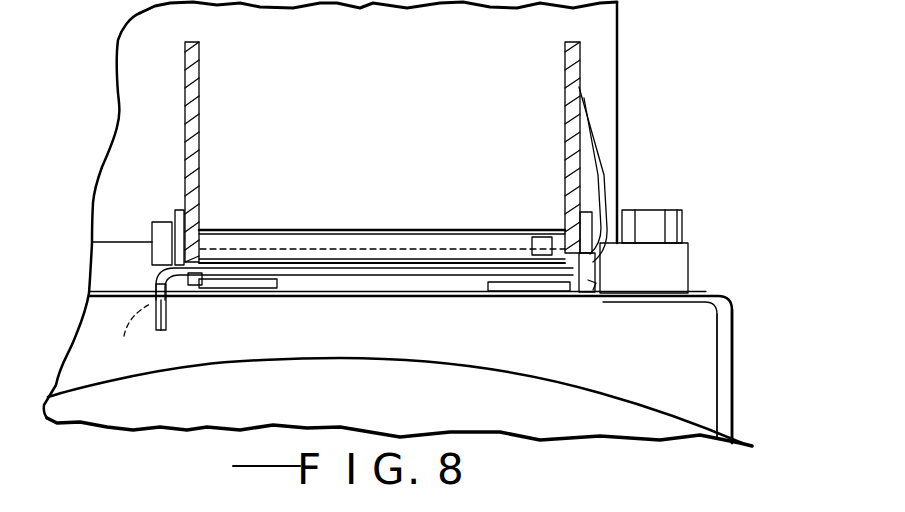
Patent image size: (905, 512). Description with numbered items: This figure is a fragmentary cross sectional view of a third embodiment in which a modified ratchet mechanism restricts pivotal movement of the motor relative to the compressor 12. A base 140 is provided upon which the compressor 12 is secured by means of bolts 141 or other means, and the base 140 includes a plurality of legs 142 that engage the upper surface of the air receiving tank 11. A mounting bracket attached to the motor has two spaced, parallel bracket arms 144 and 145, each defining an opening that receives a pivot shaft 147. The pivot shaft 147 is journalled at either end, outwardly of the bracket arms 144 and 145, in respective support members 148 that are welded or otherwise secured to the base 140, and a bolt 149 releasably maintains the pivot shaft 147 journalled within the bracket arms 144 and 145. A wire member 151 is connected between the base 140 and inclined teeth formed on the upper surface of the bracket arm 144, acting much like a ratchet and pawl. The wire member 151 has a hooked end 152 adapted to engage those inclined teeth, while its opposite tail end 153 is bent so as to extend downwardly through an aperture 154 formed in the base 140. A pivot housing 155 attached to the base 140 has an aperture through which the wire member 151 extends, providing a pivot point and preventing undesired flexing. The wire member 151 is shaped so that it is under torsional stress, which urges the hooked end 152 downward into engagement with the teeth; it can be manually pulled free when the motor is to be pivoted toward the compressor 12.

The air receiving tank 11 is at (555, 403).
The compressor 12 is at (598, 31).
The base 140 is at (700, 293).
The bolts 141 is at (683, 224).
The legs 142 is at (734, 403).
The bracket arm 144 is at (565, 68).
The bracket arm 145 is at (200, 55).
The pivot shaft 147 is at (322, 250).
The support members 148 is at (273, 288).
The bolt 149 is at (155, 222).
The wire member 151 is at (373, 268).
The hooked end 152 is at (577, 90).
The tail end 153 is at (167, 312).
The aperture 154 is at (119, 336).
The pivot housing 155 is at (593, 283).